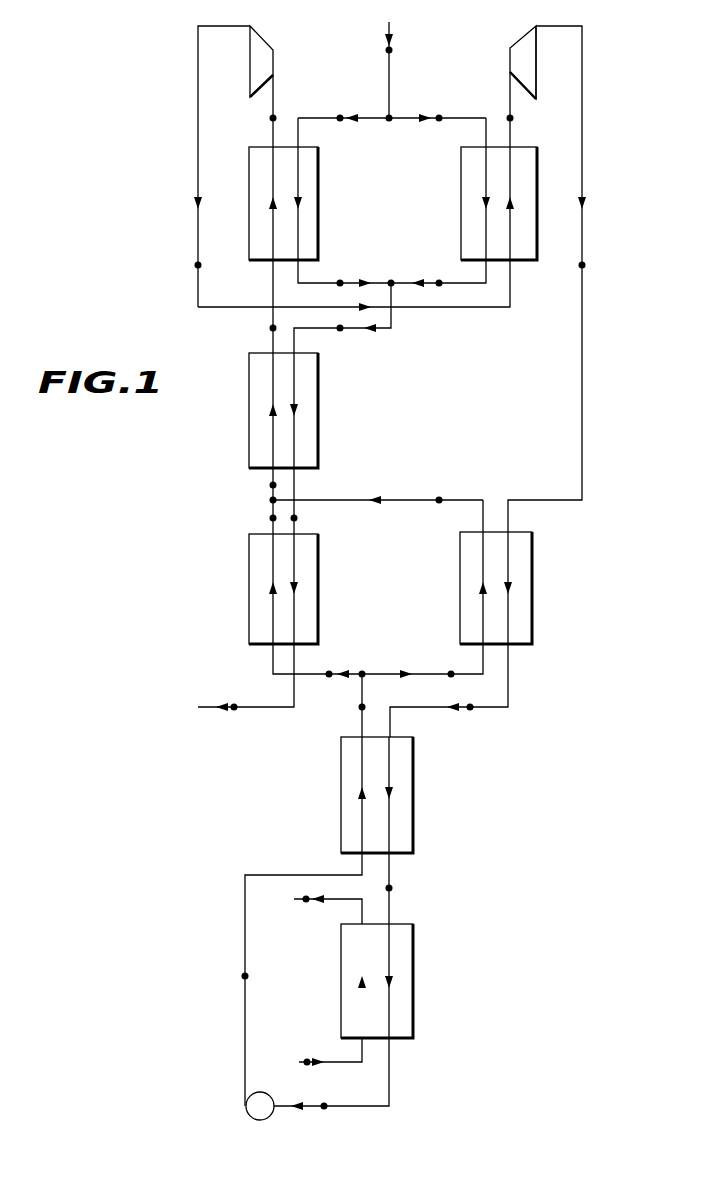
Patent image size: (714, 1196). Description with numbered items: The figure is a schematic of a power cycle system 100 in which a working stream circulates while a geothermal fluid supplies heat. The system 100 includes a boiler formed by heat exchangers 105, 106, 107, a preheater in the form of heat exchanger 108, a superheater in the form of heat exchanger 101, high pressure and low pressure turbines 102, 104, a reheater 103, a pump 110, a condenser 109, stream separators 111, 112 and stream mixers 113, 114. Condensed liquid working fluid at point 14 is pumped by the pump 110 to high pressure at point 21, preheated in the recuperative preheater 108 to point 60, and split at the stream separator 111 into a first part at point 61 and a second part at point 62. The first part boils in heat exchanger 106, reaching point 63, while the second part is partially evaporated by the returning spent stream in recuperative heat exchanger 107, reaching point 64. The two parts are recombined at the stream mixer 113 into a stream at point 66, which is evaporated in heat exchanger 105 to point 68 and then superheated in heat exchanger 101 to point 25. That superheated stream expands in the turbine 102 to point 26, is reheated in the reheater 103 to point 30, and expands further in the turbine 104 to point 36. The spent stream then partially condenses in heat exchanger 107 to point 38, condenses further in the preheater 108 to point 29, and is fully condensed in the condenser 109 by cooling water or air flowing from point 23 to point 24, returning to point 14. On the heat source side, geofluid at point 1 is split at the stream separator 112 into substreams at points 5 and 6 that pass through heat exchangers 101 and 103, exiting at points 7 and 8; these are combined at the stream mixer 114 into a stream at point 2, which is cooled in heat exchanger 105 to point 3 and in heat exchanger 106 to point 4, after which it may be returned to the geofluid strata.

The system 100 is at (583, 352).
The heat exchanger (superheater) 101 is at (318, 199).
The high pressure turbine 102 is at (273, 60).
The reheater 103 is at (461, 200).
The low pressure turbine 104 is at (510, 60).
The heat exchanger (boiler) 105 is at (318, 407).
The heat exchanger 106 is at (318, 588).
The recuperative heat exchanger 107 is at (532, 588).
The recuperative preheater 108 is at (413, 793).
The condenser 109 is at (413, 979).
The pump 110 is at (260, 1120).
The stream separator 111 is at (362, 673).
The stream separator 112 is at (392, 131).
The stream mixer 113 is at (270, 501).
The stream mixer 114 is at (397, 272).
The point 1 is at (397, 50).
The point 2 is at (342, 342).
The point 3 is at (302, 518).
The point 4 is at (235, 719).
The point 5 is at (339, 107).
The point 6 is at (438, 107).
The point 7 is at (341, 272).
The point 8 is at (440, 272).
The point 14 is at (327, 1118).
The point 21 is at (232, 976).
The point 23 is at (311, 1074).
The point 24 is at (310, 911).
The point 25 is at (261, 118).
The point 26 is at (186, 265).
The point 29 is at (404, 888).
The point 30 is at (525, 118).
The point 36 is at (598, 265).
The point 38 is at (449, 694).
The point 60 is at (351, 707).
The point 61 is at (332, 662).
The point 62 is at (453, 662).
The point 63 is at (261, 518).
The point 64 is at (442, 512).
The point 66 is at (261, 485).
The point 68 is at (261, 328).